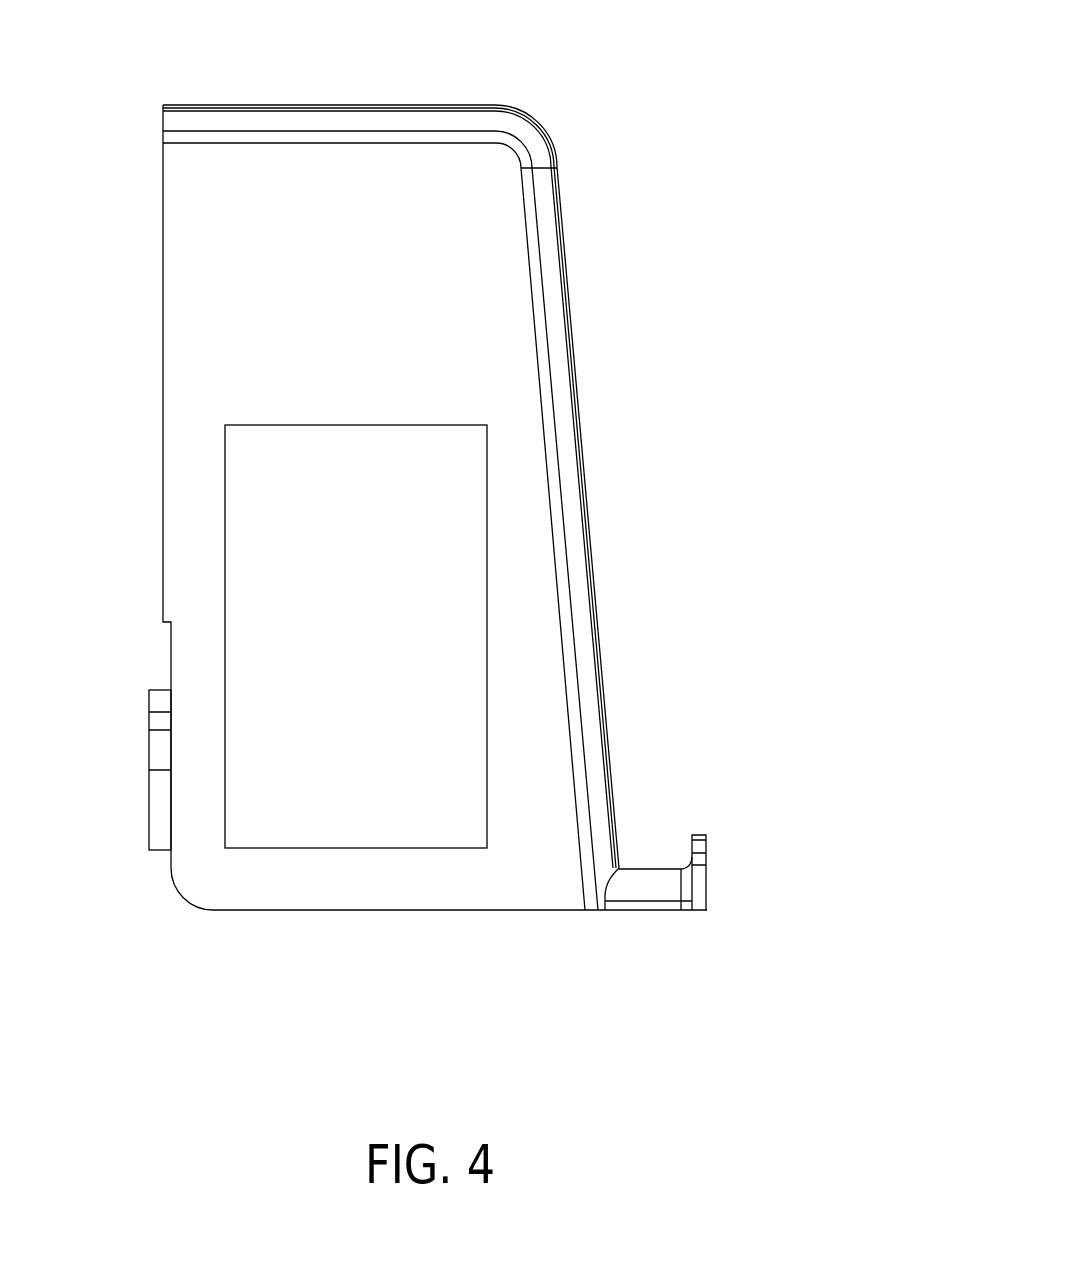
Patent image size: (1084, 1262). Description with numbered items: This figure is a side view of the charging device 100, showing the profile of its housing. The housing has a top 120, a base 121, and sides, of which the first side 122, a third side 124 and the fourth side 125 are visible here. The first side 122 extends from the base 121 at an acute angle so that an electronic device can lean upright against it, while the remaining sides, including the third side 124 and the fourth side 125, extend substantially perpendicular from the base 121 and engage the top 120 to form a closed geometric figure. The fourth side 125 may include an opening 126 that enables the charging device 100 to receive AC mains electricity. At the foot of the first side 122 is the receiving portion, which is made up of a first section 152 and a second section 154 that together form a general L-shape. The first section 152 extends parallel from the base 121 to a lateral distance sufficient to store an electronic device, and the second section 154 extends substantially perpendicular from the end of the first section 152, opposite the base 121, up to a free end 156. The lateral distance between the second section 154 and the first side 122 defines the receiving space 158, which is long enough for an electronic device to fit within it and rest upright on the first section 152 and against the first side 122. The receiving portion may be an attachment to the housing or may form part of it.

The charging device 100 is at (603, 63).
The top 120 is at (352, 105).
The base 121 is at (407, 910).
The first side 122 is at (577, 378).
The third side 124 is at (272, 223).
The fourth side 125 is at (163, 380).
The opening 126 is at (148, 829).
The first section 152 is at (648, 892).
The second section 154 is at (698, 885).
The free end 156 is at (698, 835).
The receiving space 158 is at (650, 855).